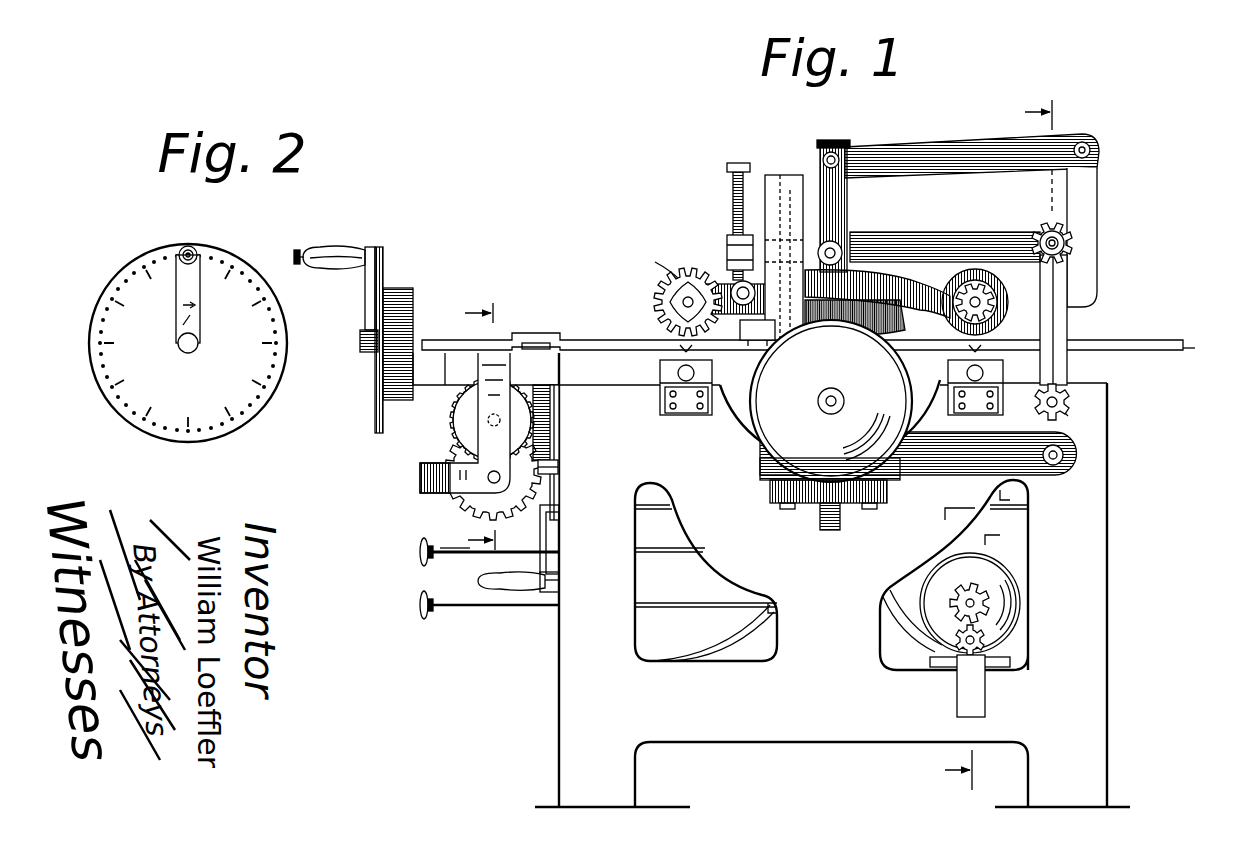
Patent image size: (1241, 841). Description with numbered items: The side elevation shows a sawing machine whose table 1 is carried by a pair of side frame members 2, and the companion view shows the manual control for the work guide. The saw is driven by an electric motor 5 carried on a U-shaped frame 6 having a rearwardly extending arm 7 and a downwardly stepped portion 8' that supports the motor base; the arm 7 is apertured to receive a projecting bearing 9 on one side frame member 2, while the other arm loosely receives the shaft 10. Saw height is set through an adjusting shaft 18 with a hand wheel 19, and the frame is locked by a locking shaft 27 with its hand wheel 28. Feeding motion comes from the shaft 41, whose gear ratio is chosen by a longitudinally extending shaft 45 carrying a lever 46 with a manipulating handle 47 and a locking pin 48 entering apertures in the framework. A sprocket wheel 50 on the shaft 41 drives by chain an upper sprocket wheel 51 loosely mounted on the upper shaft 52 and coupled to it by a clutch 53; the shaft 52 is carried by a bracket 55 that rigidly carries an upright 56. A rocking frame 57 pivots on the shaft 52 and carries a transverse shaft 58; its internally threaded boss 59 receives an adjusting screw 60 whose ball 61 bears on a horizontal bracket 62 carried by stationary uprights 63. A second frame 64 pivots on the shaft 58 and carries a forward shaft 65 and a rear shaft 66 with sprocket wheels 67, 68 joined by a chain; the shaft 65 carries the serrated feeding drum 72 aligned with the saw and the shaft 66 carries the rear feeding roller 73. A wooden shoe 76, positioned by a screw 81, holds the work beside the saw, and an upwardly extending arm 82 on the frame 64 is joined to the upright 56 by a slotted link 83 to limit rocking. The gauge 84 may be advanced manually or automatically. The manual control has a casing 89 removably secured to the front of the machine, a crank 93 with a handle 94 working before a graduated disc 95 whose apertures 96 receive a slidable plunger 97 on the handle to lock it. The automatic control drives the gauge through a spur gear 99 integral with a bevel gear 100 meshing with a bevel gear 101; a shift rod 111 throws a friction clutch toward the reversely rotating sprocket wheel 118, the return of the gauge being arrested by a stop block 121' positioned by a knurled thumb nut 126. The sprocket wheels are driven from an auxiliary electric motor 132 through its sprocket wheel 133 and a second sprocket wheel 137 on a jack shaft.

In FIG. 1, the table 1 is at (1195, 350).
In FIG. 1, the side frame members 2 is at (1108, 600).
In FIG. 1, the electric motor 5 is at (775, 403).
In FIG. 1, the U-shaped frame 6 is at (1003, 444).
In FIG. 1, the rearwardly extending arm 7 is at (965, 470).
In FIG. 1, the downwardly stepped portion 8' is at (830, 505).
In FIG. 1, the projecting bearing 9 is at (1063, 456).
In FIG. 1, the shaft 10 is at (1113, 495).
In FIG. 1, the adjusting shaft 18 is at (470, 610).
In FIG. 1, the hand wheel 19 is at (420, 605).
In FIG. 1, the locking shaft 27 is at (455, 540).
In FIG. 1, the hand wheel 28 is at (420, 553).
In FIG. 1, the shaft 41 is at (1068, 415).
In FIG. 1, the longitudinally extending shaft 45 is at (660, 505).
In FIG. 1, the lever 46 is at (548, 538).
In FIG. 1, the manipulating handle 47 is at (478, 583).
In FIG. 1, the locking pin 48 is at (559, 585).
In FIG. 1, the sprocket wheel 50 is at (1072, 400).
In FIG. 1, the upper sprocket wheel 51 is at (1040, 226).
In FIG. 1, the upper shaft 52 is at (1058, 243).
In FIG. 1, the clutch 53 is at (1070, 235).
In FIG. 1, the bracket 55 is at (1068, 322).
In FIG. 1, the upright 56 is at (1085, 272).
In FIG. 1, the rocking frame 57 is at (970, 245).
In FIG. 1, the transverse shaft 58 is at (842, 250).
In FIG. 1, the internally threaded boss 59 is at (727, 250).
In FIG. 1, the adjusting screw 60 is at (733, 190).
In FIG. 1, the ball 61 is at (730, 285).
In FIG. 1, the horizontal bracket 62 is at (750, 342).
In FIG. 1, the stationary uprights 63 is at (778, 172).
In FIG. 1, the second frame 64 is at (912, 290).
In FIG. 1, the forward shaft 65 is at (660, 295).
In FIG. 1, the rear shaft 66 is at (978, 302).
In FIG. 1, the sprocket wheel 67 is at (650, 296).
In FIG. 1, the sprocket wheel 68 is at (962, 315).
In FIG. 1, the feeding drum 72 is at (660, 262).
In FIG. 1, the rear feeding roller 73 is at (1000, 322).
In FIG. 1, the wooden shoe 76 is at (820, 345).
In FIG. 1, the screw 81 is at (831, 138).
In FIG. 1, the upwardly extending arm 82 is at (850, 195).
In FIG. 1, the link 83 is at (960, 138).
In FIG. 1, the gauge 84 is at (560, 330).
In FIG. 1, the casing 89 is at (405, 290).
In FIG. 2, the crank 93 is at (175, 330).
In FIG. 1, the crank 93 is at (362, 305).
In FIG. 2, the handle 94 is at (190, 248).
In FIG. 1, the handle 94 is at (340, 247).
In FIG. 2, the disc 95 is at (135, 255).
In FIG. 1, the disc 95 is at (385, 262).
In FIG. 2, the apertures 96 is at (100, 296).
In FIG. 2, the slidable plunger 97 is at (178, 250).
In FIG. 1, the slidable plunger 97 is at (296, 250).
In FIG. 1, the spur gear 99 is at (560, 394).
In FIG. 1, the bevel gear 100 is at (535, 388).
In FIG. 1, the bevel gear 101 is at (450, 438).
In FIG. 1, the shift rod 111 is at (558, 472).
In FIG. 1, the reversely rotating sprocket wheel 118 is at (440, 490).
In FIG. 1, the block 121' is at (789, 348).
In FIG. 1, the knurled thumb nut 126 is at (680, 375).
In FIG. 1, the auxiliary electric motor 132 is at (990, 590).
In FIG. 1, the sprocket wheel 133 is at (988, 605).
In FIG. 1, the second sprocket wheel 137 is at (985, 660).